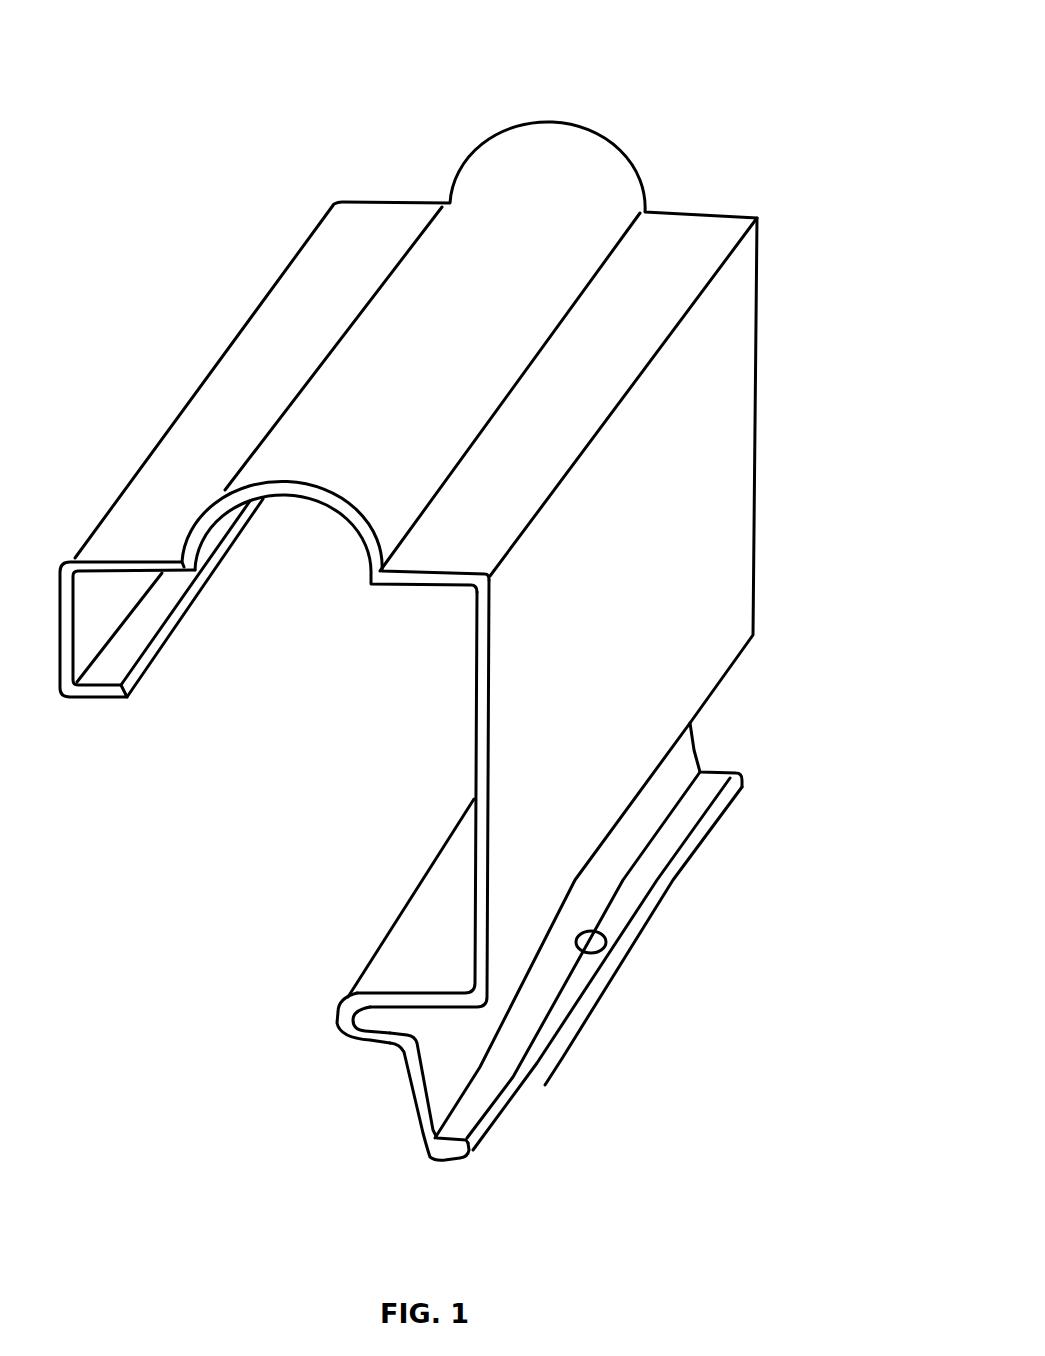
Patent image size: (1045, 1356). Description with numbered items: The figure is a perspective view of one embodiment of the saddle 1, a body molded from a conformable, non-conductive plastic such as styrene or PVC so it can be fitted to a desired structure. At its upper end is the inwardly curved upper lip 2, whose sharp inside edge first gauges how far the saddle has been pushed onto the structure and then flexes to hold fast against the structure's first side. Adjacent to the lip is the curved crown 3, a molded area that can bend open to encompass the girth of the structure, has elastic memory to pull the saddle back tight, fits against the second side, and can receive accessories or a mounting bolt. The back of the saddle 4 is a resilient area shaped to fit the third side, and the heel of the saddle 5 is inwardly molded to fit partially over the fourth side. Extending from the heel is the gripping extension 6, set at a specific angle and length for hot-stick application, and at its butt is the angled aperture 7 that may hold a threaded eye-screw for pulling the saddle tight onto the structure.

The saddle 1 is at (779, 390).
The inwardly curved upper lip 2 is at (142, 673).
The curved crown 3 is at (580, 185).
The back of the saddle 4 is at (664, 608).
The heel of the saddle 5 is at (408, 947).
The gripping extension 6 is at (449, 1072).
The aperture 7 is at (606, 952).